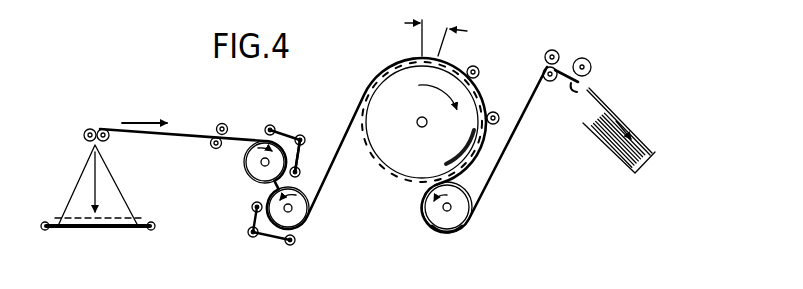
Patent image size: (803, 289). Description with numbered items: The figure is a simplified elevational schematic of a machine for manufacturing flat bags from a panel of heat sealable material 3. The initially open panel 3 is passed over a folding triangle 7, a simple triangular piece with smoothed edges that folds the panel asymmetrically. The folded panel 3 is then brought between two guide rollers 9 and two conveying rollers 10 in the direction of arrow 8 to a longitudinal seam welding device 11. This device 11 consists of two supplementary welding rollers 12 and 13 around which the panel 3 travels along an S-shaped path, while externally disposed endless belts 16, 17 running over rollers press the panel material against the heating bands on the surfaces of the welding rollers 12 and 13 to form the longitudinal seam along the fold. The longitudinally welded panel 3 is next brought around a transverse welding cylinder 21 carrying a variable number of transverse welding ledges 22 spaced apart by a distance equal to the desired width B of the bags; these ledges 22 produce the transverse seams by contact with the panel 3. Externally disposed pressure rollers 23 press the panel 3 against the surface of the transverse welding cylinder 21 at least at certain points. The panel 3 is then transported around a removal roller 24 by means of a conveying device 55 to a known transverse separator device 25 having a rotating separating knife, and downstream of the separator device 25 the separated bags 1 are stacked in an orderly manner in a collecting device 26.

The bag 1 is at (637, 131).
The panel of heat sealable material 3 is at (170, 135).
The folding triangle 7 is at (117, 200).
The arrow 8 is at (137, 121).
The guide rollers 9 is at (88, 129).
The conveying rollers 10 is at (218, 125).
The longitudinal seam welding device 11 is at (292, 123).
The welding roller 12 is at (246, 170).
The welding roller 13 is at (306, 226).
The endless belt 16 is at (305, 150).
The endless belt 17 is at (262, 245).
The transverse welding cylinder 21 is at (402, 163).
The transverse welding ledges 22 is at (366, 140).
The pressure rollers 23 is at (480, 76).
The removal roller 24 is at (460, 216).
The transverse separator device 25 is at (590, 85).
The collecting device 26 is at (648, 163).
The conveying device 55 is at (561, 51).
The width of the bags B is at (436, 32).